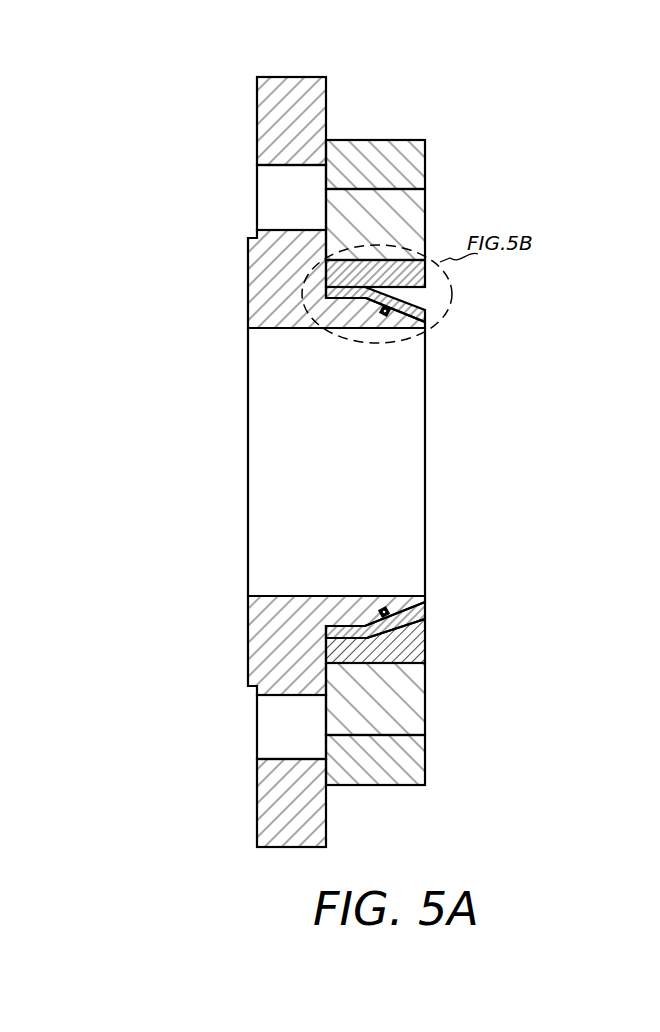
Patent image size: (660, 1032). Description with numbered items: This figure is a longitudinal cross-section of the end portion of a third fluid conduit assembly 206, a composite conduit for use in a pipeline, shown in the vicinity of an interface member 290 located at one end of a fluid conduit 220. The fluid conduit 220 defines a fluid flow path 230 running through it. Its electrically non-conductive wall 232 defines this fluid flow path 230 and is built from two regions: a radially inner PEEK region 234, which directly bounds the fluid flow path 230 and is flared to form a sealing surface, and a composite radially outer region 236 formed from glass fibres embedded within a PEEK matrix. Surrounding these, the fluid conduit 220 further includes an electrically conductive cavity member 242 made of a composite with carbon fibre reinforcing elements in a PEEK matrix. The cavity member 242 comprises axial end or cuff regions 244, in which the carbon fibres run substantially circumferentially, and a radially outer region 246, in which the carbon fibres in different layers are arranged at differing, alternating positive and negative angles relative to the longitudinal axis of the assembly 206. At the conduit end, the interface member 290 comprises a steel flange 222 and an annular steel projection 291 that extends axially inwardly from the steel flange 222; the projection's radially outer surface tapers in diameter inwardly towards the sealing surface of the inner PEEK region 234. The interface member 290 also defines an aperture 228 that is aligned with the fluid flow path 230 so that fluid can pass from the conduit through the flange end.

The third fluid conduit assembly 206 is at (213, 787).
The fluid conduit 220 is at (488, 689).
The steel flange 222 is at (288, 77).
The aperture 228 is at (228, 461).
The fluid flow path 230 is at (521, 472).
The electrically non-conductive wall 232 is at (452, 628).
The radially inner PEEK region 234 is at (426, 603).
The composite radially outer region 236 is at (426, 640).
The electrically conductive cavity member 242 is at (452, 724).
The cuff regions 244 is at (426, 703).
The radially outer region 246 is at (426, 756).
The interface member 290 is at (228, 636).
The annular steel projection 291 is at (356, 608).